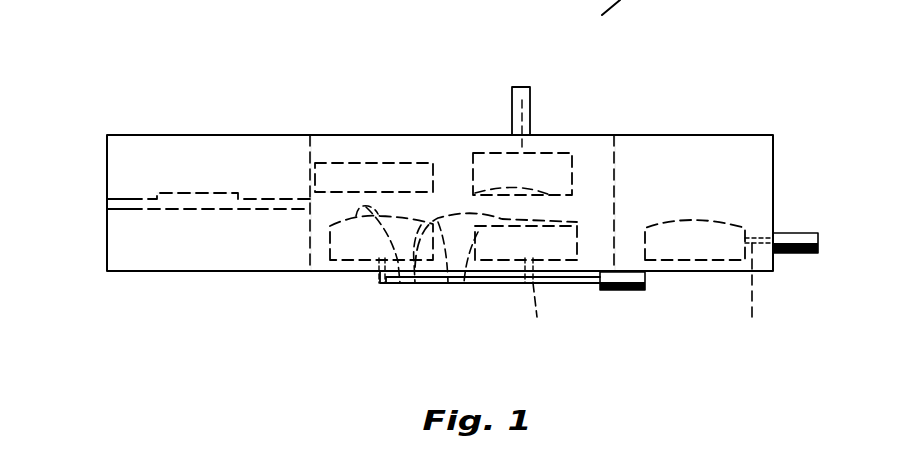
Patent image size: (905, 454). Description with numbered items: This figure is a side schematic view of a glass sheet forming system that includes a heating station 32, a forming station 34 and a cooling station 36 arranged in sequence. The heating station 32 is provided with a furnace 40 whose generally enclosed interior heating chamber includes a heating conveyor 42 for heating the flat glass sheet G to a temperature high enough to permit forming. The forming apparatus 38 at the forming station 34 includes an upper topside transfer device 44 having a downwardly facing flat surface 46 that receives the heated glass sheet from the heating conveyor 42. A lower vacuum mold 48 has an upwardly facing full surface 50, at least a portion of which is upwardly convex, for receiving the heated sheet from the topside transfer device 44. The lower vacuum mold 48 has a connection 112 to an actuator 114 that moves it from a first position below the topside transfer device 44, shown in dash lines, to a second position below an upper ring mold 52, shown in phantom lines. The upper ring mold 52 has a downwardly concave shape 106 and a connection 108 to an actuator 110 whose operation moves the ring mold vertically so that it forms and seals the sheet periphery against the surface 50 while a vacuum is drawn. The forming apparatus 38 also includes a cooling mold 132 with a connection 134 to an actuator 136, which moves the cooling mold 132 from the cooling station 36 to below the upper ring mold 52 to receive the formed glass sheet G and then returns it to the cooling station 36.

The heating station 32 is at (229, 103).
The forming station 34 is at (433, 106).
The cooling station 36 is at (718, 106).
The forming apparatus 38 is at (314, 276).
The furnace 40 is at (188, 280).
The heating conveyor 42 is at (168, 216).
The upper topside transfer device 44 is at (341, 156).
The flat surface 46 is at (340, 193).
The lower vacuum mold 48 is at (448, 283).
The full surface 50 is at (400, 283).
The upper ring mold 52 is at (582, 160).
The downwardly concave shape 106 is at (550, 195).
The connection 108 is at (526, 147).
The actuator 110 is at (530, 103).
The connection 112 is at (497, 285).
The actuator 114 is at (630, 291).
The cooling mold 132 is at (735, 216).
The connection 134 is at (752, 298).
The actuator 136 is at (803, 254).
The glass sheet G is at (194, 192).